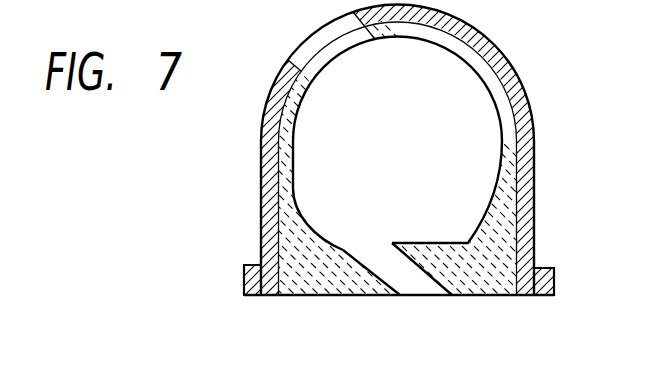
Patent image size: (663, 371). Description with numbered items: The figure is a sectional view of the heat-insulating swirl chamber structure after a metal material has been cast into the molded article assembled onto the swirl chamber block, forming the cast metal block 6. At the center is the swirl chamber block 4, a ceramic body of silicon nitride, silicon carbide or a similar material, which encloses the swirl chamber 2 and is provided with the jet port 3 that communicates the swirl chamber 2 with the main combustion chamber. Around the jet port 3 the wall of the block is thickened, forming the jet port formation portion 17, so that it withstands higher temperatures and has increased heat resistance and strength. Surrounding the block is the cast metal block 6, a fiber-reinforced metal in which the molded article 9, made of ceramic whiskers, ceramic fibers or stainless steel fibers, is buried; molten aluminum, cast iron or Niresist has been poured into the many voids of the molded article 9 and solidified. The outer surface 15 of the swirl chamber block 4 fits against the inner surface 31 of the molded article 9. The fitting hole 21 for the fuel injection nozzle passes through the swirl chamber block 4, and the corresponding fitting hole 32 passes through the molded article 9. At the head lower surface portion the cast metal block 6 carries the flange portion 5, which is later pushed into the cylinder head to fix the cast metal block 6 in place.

The swirl chamber 2 is at (413, 155).
The jet port 3 is at (391, 262).
The swirl chamber block 4 is at (490, 206).
The flange portion 5 is at (252, 274).
The cast metal block 6 is at (421, 150).
The molded article 9 is at (519, 178).
The outer surface 15 is at (294, 146).
The jet port formation portion 17 is at (323, 265).
The fitting hole 21 is at (301, 74).
The inner surface 31 is at (436, 46).
The fitting hole 32 is at (288, 59).